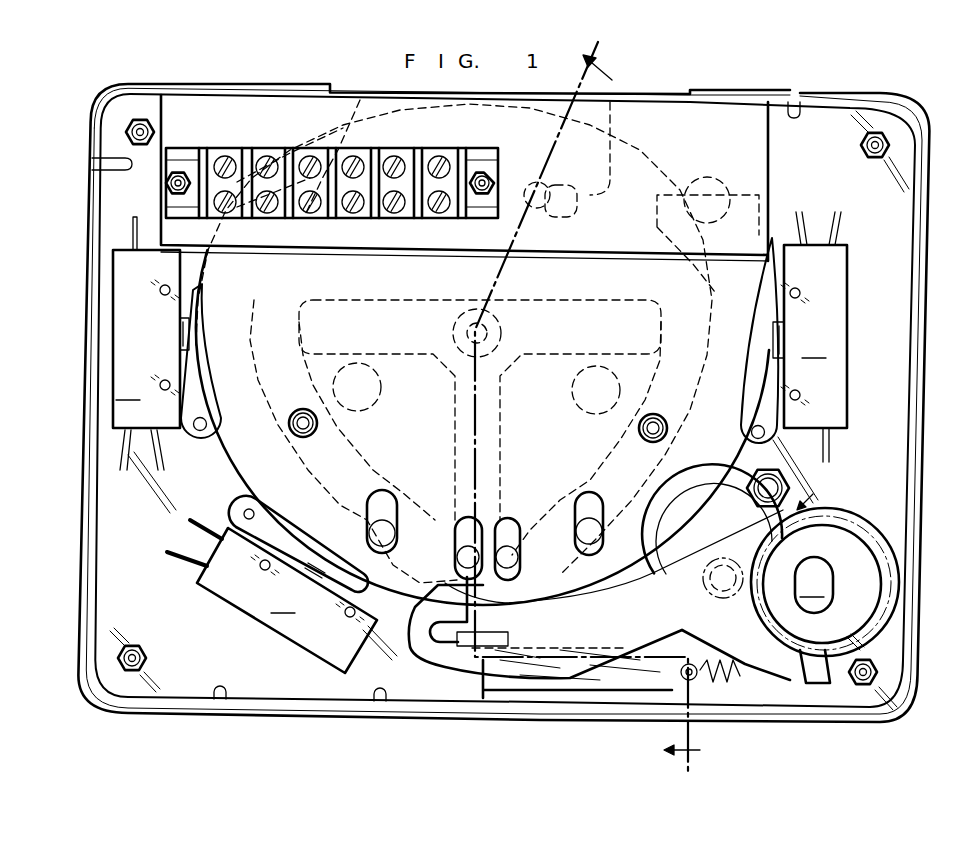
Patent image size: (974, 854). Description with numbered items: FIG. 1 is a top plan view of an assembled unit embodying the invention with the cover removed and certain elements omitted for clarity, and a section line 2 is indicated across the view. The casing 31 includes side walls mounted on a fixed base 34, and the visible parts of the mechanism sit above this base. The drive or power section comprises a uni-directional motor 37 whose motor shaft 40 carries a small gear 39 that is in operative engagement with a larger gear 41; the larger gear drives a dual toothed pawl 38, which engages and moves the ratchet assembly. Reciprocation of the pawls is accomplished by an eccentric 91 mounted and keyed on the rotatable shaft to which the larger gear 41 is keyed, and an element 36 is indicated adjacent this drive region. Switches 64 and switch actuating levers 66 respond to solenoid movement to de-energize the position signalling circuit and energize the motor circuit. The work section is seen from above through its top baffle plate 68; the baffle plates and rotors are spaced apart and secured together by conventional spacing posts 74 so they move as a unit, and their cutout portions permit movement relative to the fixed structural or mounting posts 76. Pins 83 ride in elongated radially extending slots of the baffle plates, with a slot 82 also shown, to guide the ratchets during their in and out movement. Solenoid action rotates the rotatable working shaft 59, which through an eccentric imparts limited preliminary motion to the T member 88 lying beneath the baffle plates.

The section line 2- 2 is at (596, 408).
The casing 31 is at (927, 300).
The fixed base 34 is at (898, 377).
The timer dial assembly 36 is at (816, 494).
The uni-directional motor 37 is at (725, 512).
The dual toothed pawl 38 is at (573, 670).
The small gear 39 is at (737, 600).
The motor shaft 40 is at (708, 582).
The larger gear 41 is at (747, 603).
The rotatable working shaft 59 is at (497, 317).
The switches 64 is at (480, 442).
The switch actuating levers 66 is at (773, 437).
The top baffle plate 68 is at (712, 462).
The spacing posts 74 is at (646, 436).
The fixed structural or mounting posts 76 is at (572, 212).
The slot 82 is at (458, 524).
The pins 83 is at (458, 553).
The T member 88 is at (505, 420).
The eccentric 91 is at (879, 579).